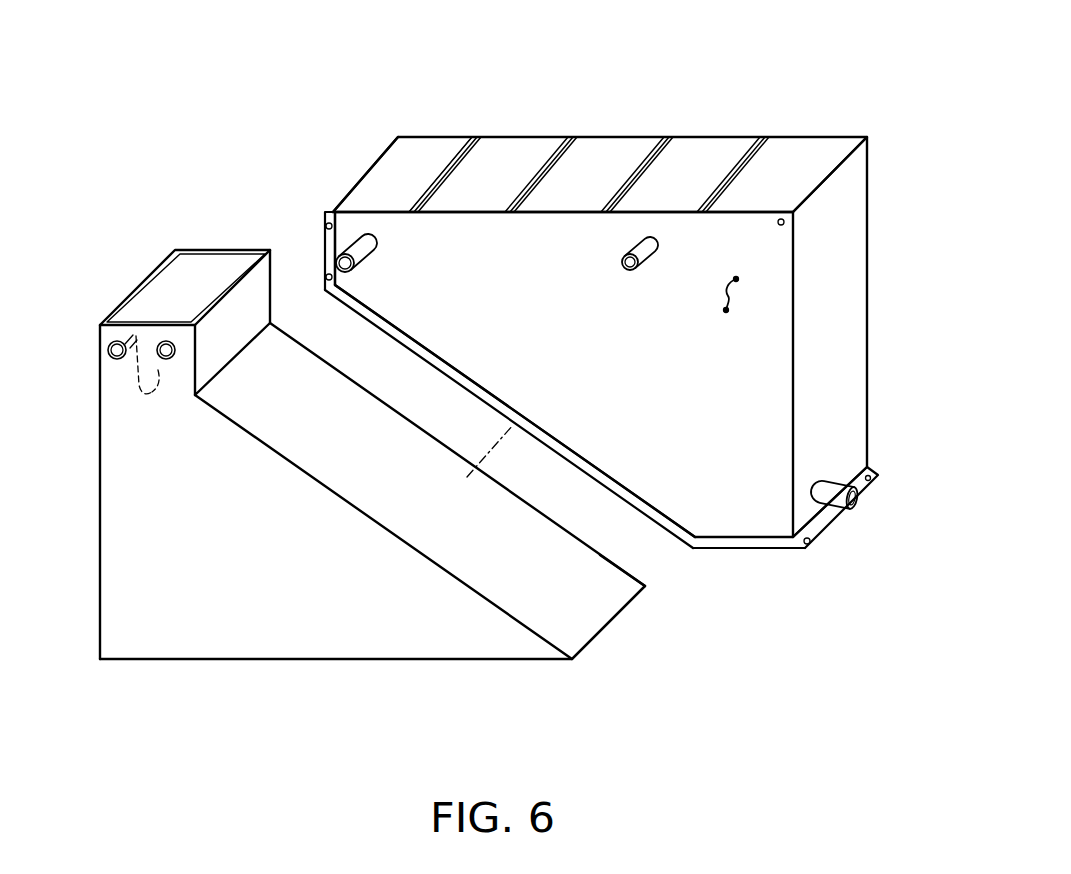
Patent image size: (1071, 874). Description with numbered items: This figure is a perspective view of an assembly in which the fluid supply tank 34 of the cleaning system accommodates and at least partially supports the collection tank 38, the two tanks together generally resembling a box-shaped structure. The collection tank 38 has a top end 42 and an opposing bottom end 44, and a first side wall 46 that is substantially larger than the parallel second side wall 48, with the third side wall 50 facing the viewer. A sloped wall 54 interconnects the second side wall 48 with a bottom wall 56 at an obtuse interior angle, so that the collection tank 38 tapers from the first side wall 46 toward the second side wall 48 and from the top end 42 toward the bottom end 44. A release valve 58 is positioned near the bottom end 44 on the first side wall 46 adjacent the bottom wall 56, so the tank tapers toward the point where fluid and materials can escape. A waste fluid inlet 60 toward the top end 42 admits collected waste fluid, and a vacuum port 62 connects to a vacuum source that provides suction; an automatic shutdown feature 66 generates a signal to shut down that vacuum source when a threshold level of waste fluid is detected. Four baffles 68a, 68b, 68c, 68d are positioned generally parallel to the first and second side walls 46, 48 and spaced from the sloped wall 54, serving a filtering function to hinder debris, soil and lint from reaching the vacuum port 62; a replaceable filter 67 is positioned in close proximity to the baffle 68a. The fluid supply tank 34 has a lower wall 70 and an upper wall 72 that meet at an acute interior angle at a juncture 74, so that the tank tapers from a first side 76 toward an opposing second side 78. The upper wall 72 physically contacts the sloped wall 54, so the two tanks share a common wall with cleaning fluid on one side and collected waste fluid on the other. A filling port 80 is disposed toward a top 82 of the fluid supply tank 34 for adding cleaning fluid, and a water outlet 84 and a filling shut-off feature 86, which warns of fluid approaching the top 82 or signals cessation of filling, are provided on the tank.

The fluid supply tank 34 is at (313, 675).
The collection tank 38 is at (546, 84).
The top end 42 is at (628, 137).
The bottom end 44 is at (748, 548).
The first side wall 46 is at (818, 318).
The second side wall 48 is at (352, 197).
The third side wall 50 is at (616, 370).
The sloped wall 54 is at (560, 455).
The bottom wall 56 is at (830, 512).
The release valve 58 is at (845, 506).
The waste fluid inlet 60 is at (658, 260).
The vacuum port 62 is at (375, 258).
The automatic shutdown feature 66 is at (732, 297).
The replaceable filter 67 is at (453, 137).
The baffle 68a is at (488, 137).
The baffle 68b is at (565, 137).
The baffle 68c is at (665, 137).
The baffle 68d is at (767, 137).
The lower wall 70 is at (360, 660).
The upper wall 72 is at (405, 504).
The juncture 74 is at (592, 640).
The first side 76 is at (100, 525).
The second side 78 is at (646, 588).
The filling port 80 is at (190, 285).
The top 82 is at (212, 248).
The water outlet 84 is at (158, 344).
The filling shut-off feature 86 is at (110, 353).